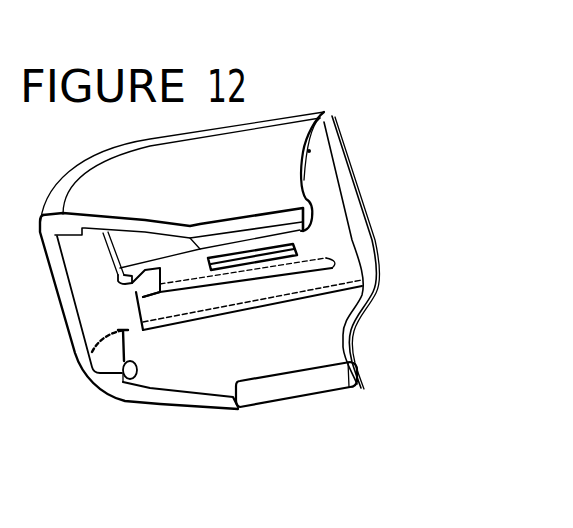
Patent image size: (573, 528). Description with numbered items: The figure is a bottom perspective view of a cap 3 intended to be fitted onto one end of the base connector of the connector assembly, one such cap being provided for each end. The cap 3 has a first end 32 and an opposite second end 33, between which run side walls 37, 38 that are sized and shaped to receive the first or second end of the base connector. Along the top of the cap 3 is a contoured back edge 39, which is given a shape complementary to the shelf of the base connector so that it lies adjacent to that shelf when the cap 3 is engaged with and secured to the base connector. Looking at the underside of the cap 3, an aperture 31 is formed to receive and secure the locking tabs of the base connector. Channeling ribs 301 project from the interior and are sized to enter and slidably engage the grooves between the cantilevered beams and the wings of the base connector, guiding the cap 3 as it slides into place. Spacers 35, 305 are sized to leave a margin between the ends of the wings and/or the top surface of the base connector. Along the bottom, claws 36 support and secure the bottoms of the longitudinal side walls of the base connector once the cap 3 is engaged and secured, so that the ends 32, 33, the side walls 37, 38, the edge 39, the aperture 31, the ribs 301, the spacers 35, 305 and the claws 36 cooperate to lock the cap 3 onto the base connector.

The cap 3 is at (270, 104).
The side wall 38 is at (198, 181).
The contoured back edge 39 is at (310, 150).
The second end 33 is at (357, 197).
The channeling rib 301 is at (298, 255).
The spacer 305 is at (338, 266).
The first end 32 is at (63, 290).
The aperture 31 is at (133, 288).
The spacer 35 is at (130, 378).
The side wall 37 is at (203, 357).
The bottom claw 36 is at (307, 381).